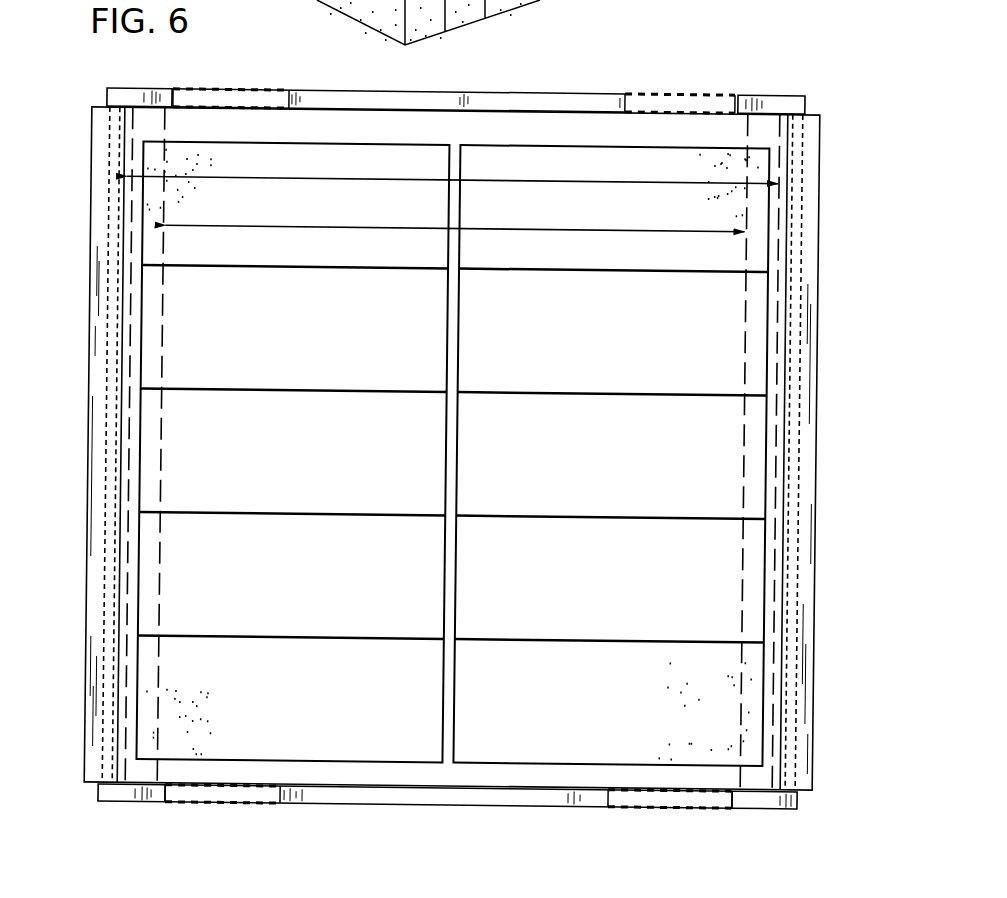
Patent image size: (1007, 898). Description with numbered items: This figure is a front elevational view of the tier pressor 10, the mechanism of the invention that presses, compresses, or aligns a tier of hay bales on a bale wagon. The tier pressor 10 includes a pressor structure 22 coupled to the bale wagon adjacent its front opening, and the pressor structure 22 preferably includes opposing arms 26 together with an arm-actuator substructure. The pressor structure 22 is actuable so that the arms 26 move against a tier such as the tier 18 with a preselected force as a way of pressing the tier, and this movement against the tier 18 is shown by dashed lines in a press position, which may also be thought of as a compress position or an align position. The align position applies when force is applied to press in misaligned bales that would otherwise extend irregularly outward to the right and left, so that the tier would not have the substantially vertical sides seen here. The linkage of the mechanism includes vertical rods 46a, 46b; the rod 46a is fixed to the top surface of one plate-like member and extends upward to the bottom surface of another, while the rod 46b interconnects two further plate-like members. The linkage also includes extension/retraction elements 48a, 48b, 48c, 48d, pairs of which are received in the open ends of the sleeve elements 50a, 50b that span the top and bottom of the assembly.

The tier pressor 10 is at (79, 697).
The tier 18 is at (302, 145).
The pressor structure 22 is at (77, 429).
The opposing arms 26 is at (87, 296).
The vertical rod 46a is at (105, 736).
The rod 46b is at (801, 141).
The extension/retraction element 48a is at (141, 806).
The extension/retraction element 48b is at (139, 93).
The extension/retraction element 48c is at (761, 93).
The extension/retraction element 48d is at (756, 805).
The sleeve element 50a is at (444, 806).
The sleeve element 50b is at (474, 93).